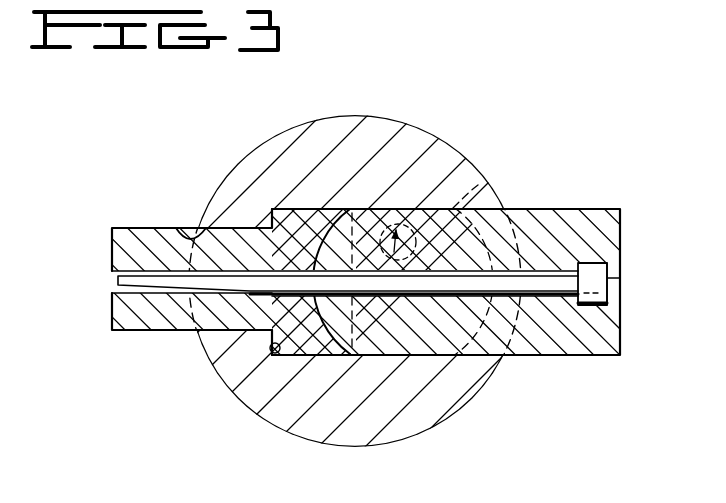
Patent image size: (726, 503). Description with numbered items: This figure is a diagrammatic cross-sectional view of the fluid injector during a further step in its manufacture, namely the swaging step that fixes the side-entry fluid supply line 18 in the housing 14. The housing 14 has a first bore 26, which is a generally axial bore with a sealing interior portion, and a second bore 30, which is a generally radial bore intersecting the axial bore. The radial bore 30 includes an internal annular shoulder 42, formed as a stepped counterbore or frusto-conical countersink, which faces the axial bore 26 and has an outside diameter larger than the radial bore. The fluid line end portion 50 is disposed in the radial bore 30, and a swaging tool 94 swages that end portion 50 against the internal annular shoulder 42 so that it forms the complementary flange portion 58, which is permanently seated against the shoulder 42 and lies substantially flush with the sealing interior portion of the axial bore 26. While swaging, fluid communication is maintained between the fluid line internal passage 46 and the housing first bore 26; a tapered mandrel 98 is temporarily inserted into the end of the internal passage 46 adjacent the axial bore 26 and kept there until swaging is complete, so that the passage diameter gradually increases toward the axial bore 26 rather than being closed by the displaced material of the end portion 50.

The housing 14 is at (460, 142).
The side-entry fluid supply line 18 is at (130, 334).
The housing first bore 26 is at (496, 180).
The housing second bore 30 is at (176, 228).
The internal annular shoulder 42 is at (272, 356).
The internal passage 46 is at (116, 279).
The fluid line end portion 50 is at (258, 344).
The flange portion 58 is at (296, 209).
The swaging tool 94 is at (549, 210).
The tapered mandrel 98 is at (621, 278).